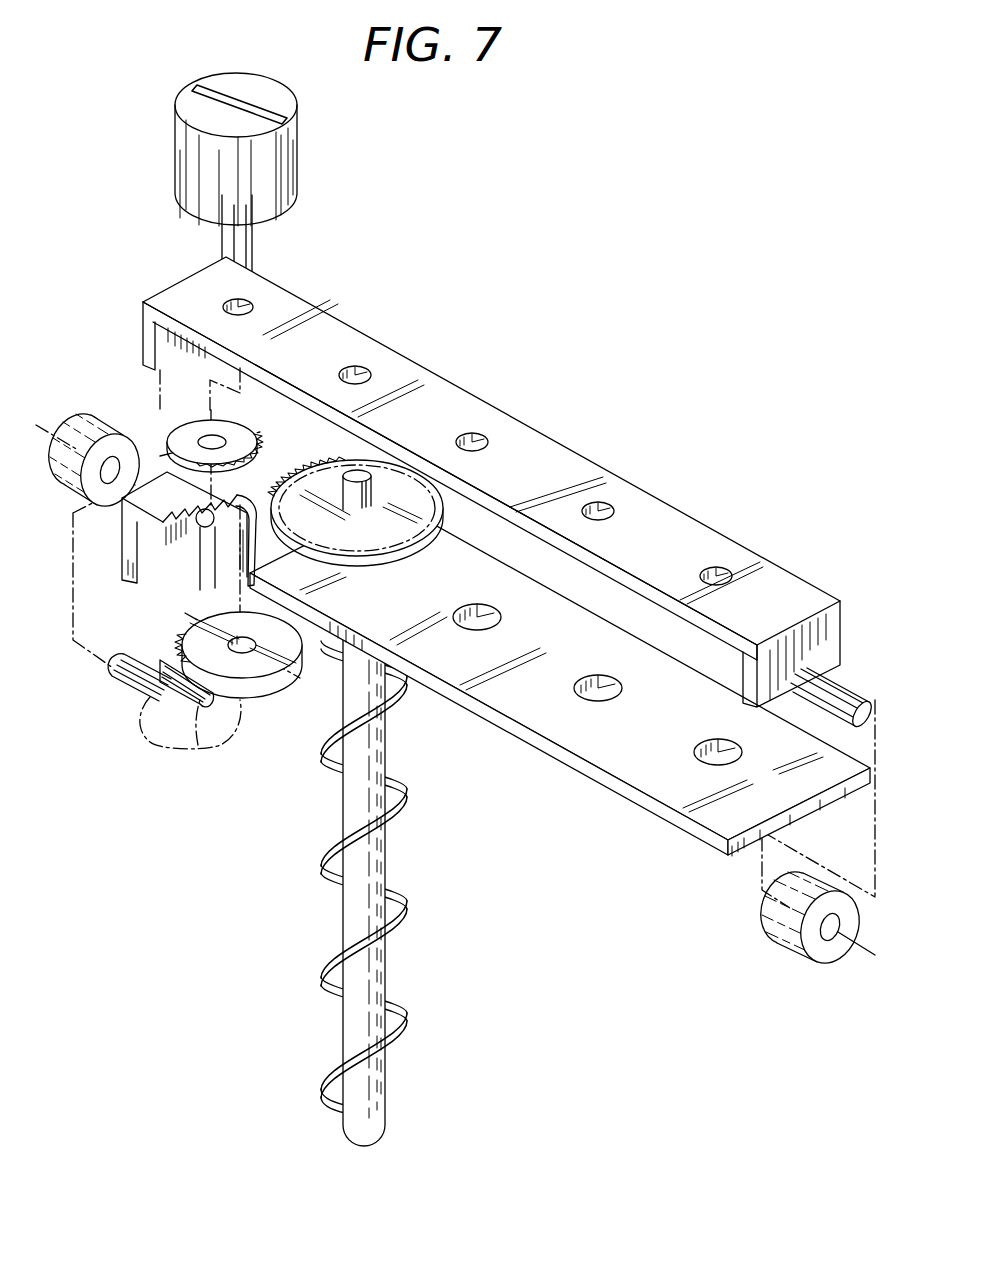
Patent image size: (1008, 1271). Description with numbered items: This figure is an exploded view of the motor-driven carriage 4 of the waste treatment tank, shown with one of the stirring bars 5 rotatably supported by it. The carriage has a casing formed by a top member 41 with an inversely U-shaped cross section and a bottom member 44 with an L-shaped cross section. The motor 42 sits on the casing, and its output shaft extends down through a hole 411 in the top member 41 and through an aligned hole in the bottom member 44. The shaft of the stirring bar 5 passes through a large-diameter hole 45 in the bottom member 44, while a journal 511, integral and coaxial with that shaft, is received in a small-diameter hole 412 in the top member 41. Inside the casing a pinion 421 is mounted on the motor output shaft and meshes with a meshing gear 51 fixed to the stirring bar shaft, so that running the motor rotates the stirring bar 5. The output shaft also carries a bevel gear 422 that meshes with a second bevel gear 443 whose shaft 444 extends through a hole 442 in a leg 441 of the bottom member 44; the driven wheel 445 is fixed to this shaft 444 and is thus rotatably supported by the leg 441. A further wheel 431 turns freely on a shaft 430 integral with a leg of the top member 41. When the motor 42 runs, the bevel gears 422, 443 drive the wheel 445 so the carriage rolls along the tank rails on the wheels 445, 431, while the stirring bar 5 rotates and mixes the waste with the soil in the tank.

The feed drive assembly 4 is at (605, 464).
The upper support rail 41 is at (333, 333).
The hole 411 is at (232, 305).
The small-diameter hole 412 is at (372, 372).
The knob 42 is at (272, 160).
The pinion 421 is at (178, 418).
The bevel gear 422 is at (266, 685).
The shaft 430 is at (845, 690).
The wheel 431 is at (772, 930).
The base plate 44 is at (672, 800).
The leg 441 is at (127, 558).
The hole 442 is at (197, 552).
The bevel gear 443 is at (173, 735).
The shaft 444 is at (115, 680).
The wheel 445 is at (84, 413).
The hole 45 is at (598, 702).
The screw shaft 5 is at (373, 870).
The meshing gear 51 is at (410, 493).
The journal 511 is at (383, 472).